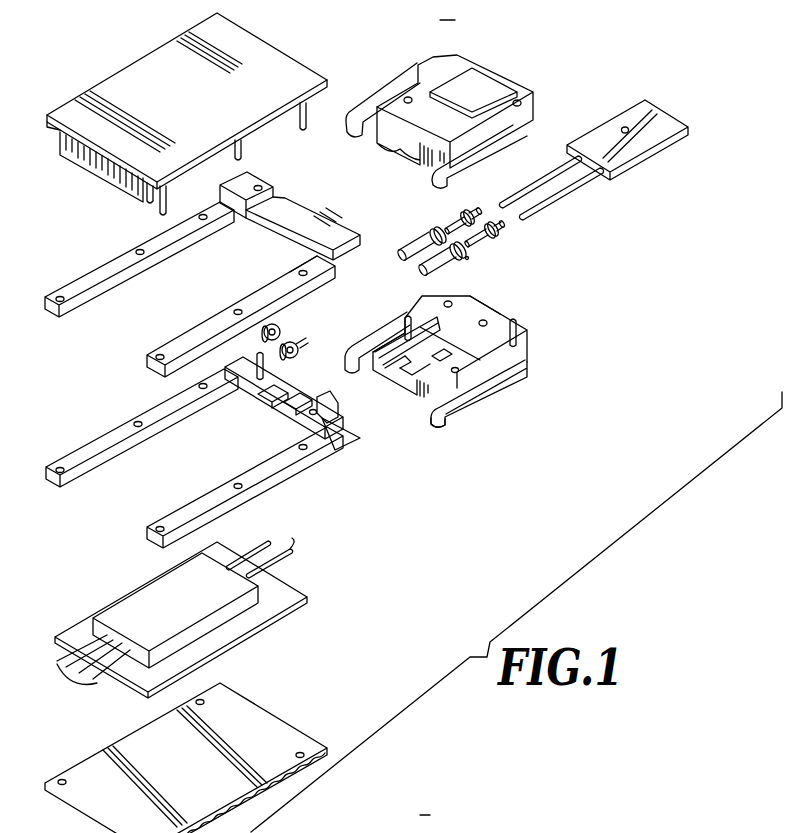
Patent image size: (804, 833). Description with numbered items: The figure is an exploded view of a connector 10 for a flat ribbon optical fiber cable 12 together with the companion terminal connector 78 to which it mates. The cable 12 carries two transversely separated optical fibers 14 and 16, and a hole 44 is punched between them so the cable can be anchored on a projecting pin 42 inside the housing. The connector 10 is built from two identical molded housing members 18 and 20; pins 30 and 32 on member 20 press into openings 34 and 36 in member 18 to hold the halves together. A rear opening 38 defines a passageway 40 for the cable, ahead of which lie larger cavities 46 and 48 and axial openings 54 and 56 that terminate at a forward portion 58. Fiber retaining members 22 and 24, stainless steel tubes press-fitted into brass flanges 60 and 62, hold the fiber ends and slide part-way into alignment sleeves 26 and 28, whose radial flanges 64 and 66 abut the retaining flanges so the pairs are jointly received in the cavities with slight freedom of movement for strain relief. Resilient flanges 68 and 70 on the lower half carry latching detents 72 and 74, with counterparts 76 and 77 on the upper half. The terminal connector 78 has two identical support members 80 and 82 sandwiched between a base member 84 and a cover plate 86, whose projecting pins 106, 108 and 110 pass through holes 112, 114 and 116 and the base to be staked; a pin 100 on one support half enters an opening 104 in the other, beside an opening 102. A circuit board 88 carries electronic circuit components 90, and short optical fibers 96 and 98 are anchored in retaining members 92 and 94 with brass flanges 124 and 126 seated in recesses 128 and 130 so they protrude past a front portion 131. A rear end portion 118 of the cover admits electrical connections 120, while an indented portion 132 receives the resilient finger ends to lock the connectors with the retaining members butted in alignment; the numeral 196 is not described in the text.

The connector 10 is at (446, 50).
The flat ribbon optical fiber cable 12 is at (637, 106).
The optical fiber 14 is at (553, 161).
The optical fiber 16 is at (567, 191).
The housing member 18 is at (468, 62).
The housing member 20 is at (528, 344).
The fiber retaining member 22 is at (449, 227).
The fiber retaining member 24 is at (474, 244).
The alignment sleeve 26 is at (410, 248).
The alignment sleeve 28 is at (438, 267).
The projecting pin 30 is at (519, 321).
The projecting pin 32 is at (408, 316).
The opening 34 is at (521, 99).
The opening 36 is at (408, 96).
The rear opening 38 is at (478, 312).
The passageway 40 is at (450, 309).
The projecting pin 42 is at (488, 322).
The hole 44 is at (628, 134).
The cavity 46 is at (413, 342).
The cavity 48 is at (445, 368).
The axial opening 54 is at (393, 377).
The axial opening 56 is at (413, 380).
The forward portion 58 is at (413, 398).
The brass flange 60 is at (466, 211).
The brass flange 62 is at (500, 232).
The radial flange 64 is at (430, 228).
The radial flange 66 is at (467, 258).
The resilient flange 68 is at (393, 320).
The resilient flange 70 is at (498, 387).
The latching detent 72 is at (348, 349).
The latching detent 74 is at (437, 425).
The resilient finger 76 is at (385, 92).
The resilient finger 77 is at (492, 157).
The terminal connector 78 is at (112, 75).
The support member 80 is at (90, 299).
The support member 82 is at (85, 447).
The base member 84 is at (85, 765).
The cover plate 86 is at (78, 110).
The circuit board 88 is at (83, 622).
The electronic circuit components 90 is at (230, 615).
The fiber retaining member 92 is at (283, 325).
The fiber retaining member 94 is at (298, 340).
The short optical fiber 96 is at (255, 547).
The short optical fiber 98 is at (278, 558).
The projecting pin 100 is at (258, 356).
The opening 102 is at (315, 415).
The opening 104 is at (259, 186).
The projecting pin 106 is at (163, 185).
The projecting pin 108 is at (237, 145).
The projecting pin 110 is at (303, 117).
The hole 112 is at (158, 353).
The hole 114 is at (233, 306).
The hole 116 is at (307, 264).
The rear end portion 118 is at (90, 168).
The electrical connections 120 is at (73, 680).
The brass flange 124 is at (270, 322).
The brass flange 126 is at (293, 358).
The recess 128 is at (262, 396).
The recess 130 is at (285, 408).
The front portion 131 is at (333, 404).
The indented portion 132 is at (342, 431).
The element 196 is at (424, 815).